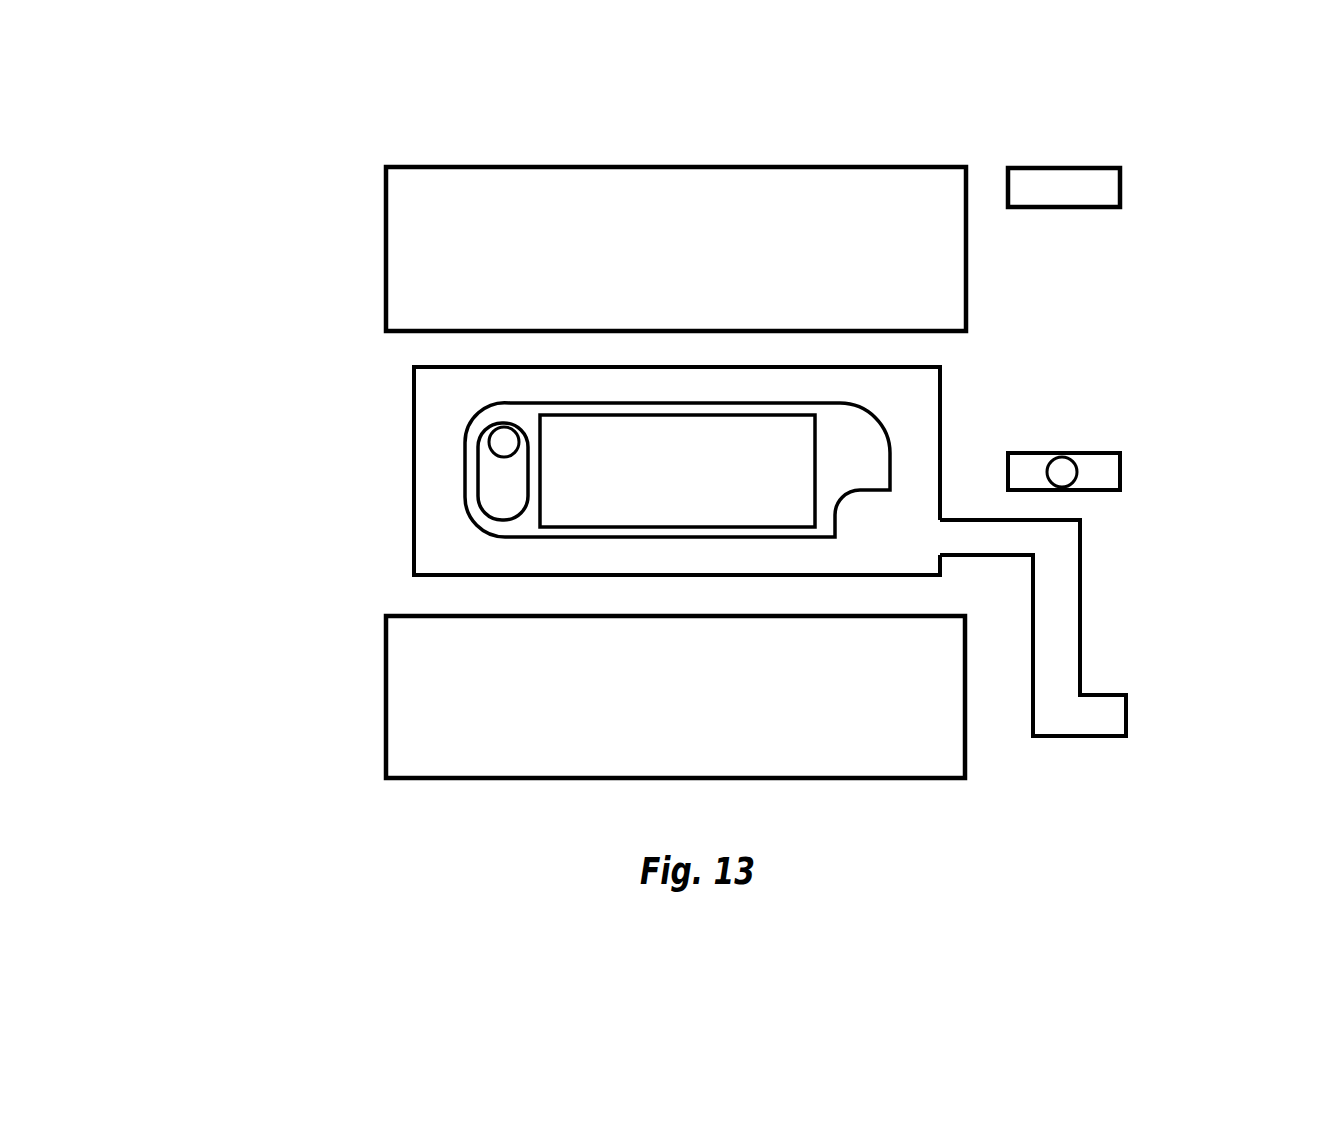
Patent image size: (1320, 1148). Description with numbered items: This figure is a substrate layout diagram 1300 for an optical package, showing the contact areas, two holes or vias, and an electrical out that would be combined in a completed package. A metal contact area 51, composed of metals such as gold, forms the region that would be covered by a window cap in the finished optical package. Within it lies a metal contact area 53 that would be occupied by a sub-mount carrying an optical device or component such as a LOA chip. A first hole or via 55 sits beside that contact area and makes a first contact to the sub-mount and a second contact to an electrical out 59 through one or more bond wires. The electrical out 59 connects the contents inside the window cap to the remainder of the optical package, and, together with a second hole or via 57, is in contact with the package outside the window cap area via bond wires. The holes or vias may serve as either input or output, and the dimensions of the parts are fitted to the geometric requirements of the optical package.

The substrate layout diagram 1300 is at (300, 145).
The metal contact area 51 is at (426, 430).
The metal contact area 53 is at (722, 457).
The first hole or via 55 is at (482, 448).
The second hole or via 57 is at (1066, 472).
The electrical out 59 is at (1082, 620).